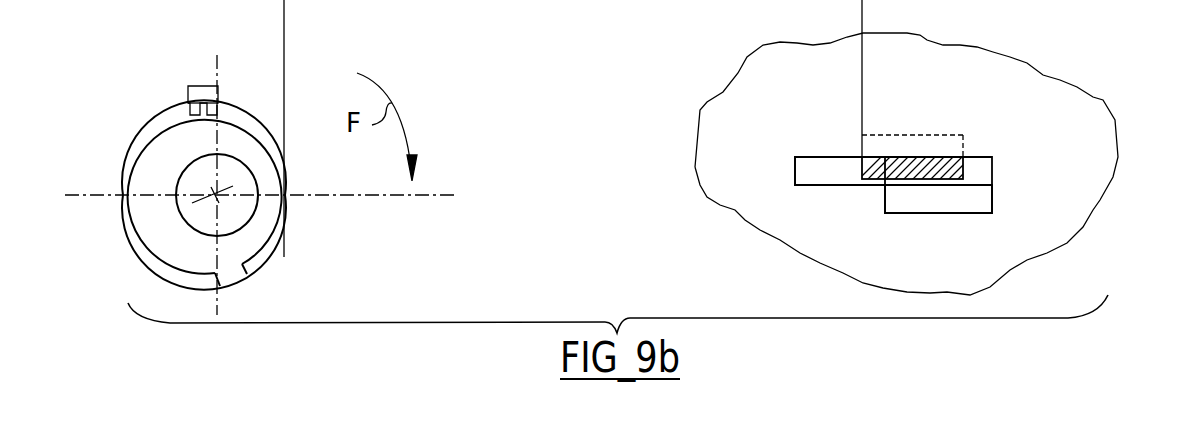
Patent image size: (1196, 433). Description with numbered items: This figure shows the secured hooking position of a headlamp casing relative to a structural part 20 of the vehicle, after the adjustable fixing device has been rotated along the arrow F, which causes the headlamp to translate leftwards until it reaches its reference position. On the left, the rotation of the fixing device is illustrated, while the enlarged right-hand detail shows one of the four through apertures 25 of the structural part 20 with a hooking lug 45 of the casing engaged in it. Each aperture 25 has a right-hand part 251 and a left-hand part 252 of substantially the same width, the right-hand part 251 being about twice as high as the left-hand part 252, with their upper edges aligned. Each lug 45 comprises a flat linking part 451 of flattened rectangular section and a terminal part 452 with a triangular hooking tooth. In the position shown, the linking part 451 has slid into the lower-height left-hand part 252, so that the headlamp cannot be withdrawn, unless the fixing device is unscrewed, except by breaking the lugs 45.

The structural part 20 is at (752, 177).
The through aperture 25 is at (931, 181).
The right-hand part 251 is at (937, 200).
The left-hand part 252 is at (821, 157).
The hooking lug 45 is at (937, 92).
The linking part 451 is at (950, 157).
The terminal part 452 is at (883, 147).